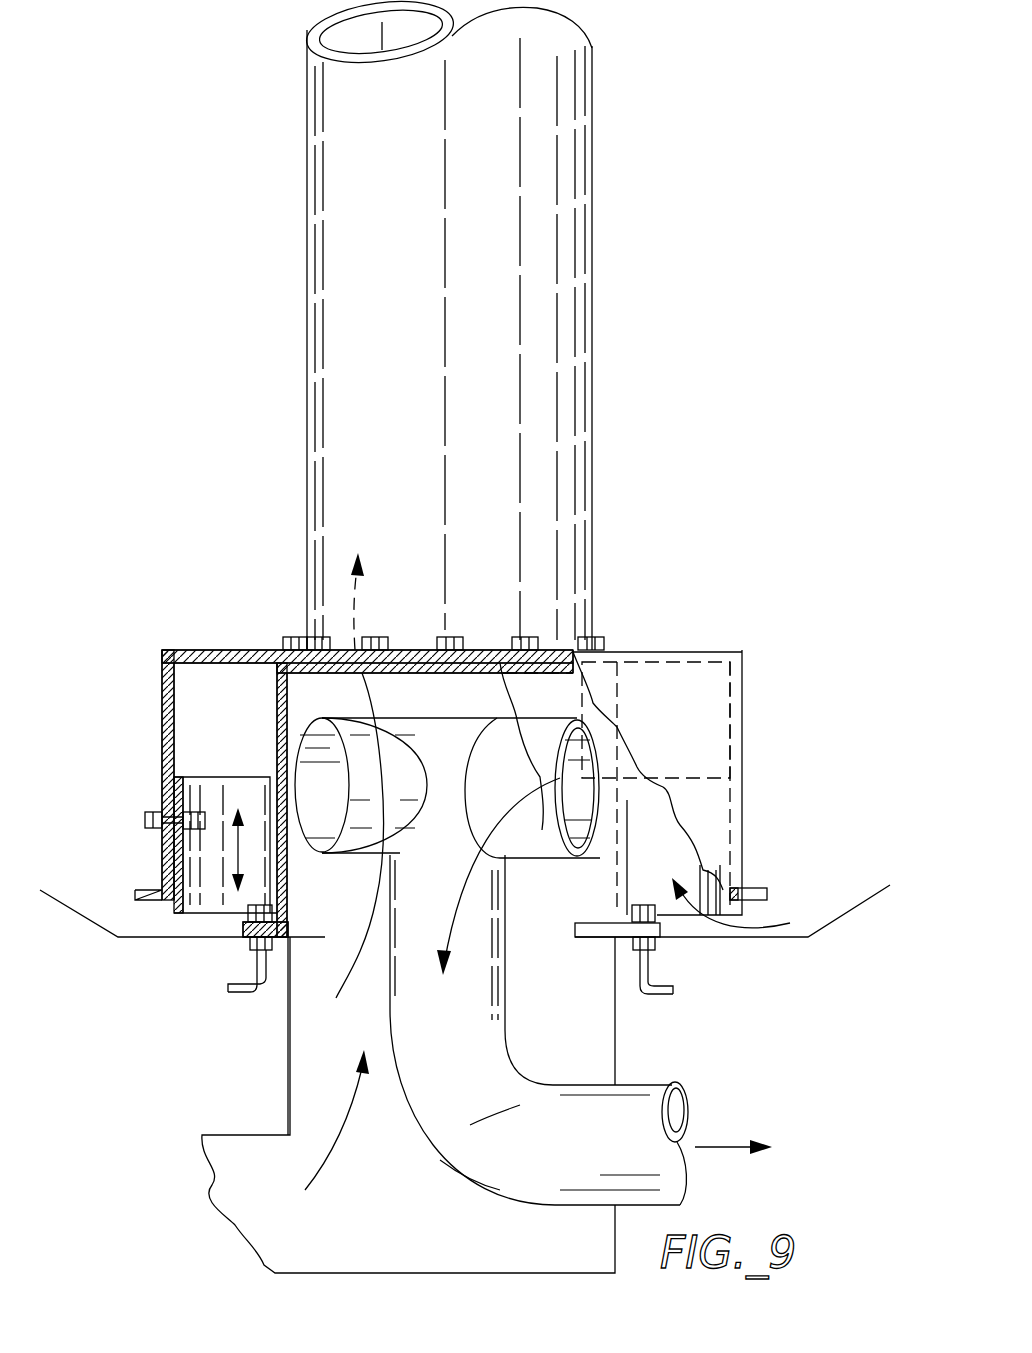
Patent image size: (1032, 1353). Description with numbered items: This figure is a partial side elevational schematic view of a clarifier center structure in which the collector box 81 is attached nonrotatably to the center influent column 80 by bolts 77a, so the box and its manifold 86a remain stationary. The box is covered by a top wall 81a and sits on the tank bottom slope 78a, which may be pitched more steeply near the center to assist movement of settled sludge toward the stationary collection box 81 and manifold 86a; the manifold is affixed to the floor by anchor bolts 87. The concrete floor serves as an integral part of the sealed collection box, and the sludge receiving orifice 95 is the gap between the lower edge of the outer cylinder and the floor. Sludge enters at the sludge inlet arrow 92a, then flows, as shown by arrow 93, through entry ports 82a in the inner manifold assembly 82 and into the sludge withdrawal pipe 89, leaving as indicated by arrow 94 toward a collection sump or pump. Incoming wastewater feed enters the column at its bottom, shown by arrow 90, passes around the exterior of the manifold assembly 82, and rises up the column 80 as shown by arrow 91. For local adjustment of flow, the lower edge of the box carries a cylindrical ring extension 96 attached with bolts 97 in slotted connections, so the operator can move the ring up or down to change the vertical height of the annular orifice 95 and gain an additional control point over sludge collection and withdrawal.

The center influent column 80 is at (593, 362).
The bolts 77a is at (588, 650).
The housing top wall 81a is at (727, 652).
The collection box 81 is at (742, 848).
The manifold 86a is at (277, 728).
The entry ports 82a is at (313, 782).
The inner manifold assembly 82 is at (587, 768).
The arrow 93 is at (660, 820).
The cylindrical ring extension 96 is at (175, 858).
The bolts 97 is at (162, 812).
The sludge receiving orifice 95 is at (190, 928).
The tank bottom slope 78a is at (75, 905).
The anchor bolts 87 is at (246, 995).
The sludge withdrawal pipe 89 is at (652, 1085).
The arrow 91 is at (352, 612).
The arrow 90 is at (350, 1125).
The arrow 94 is at (730, 1147).
The sludge inlet arrow 92a is at (778, 917).